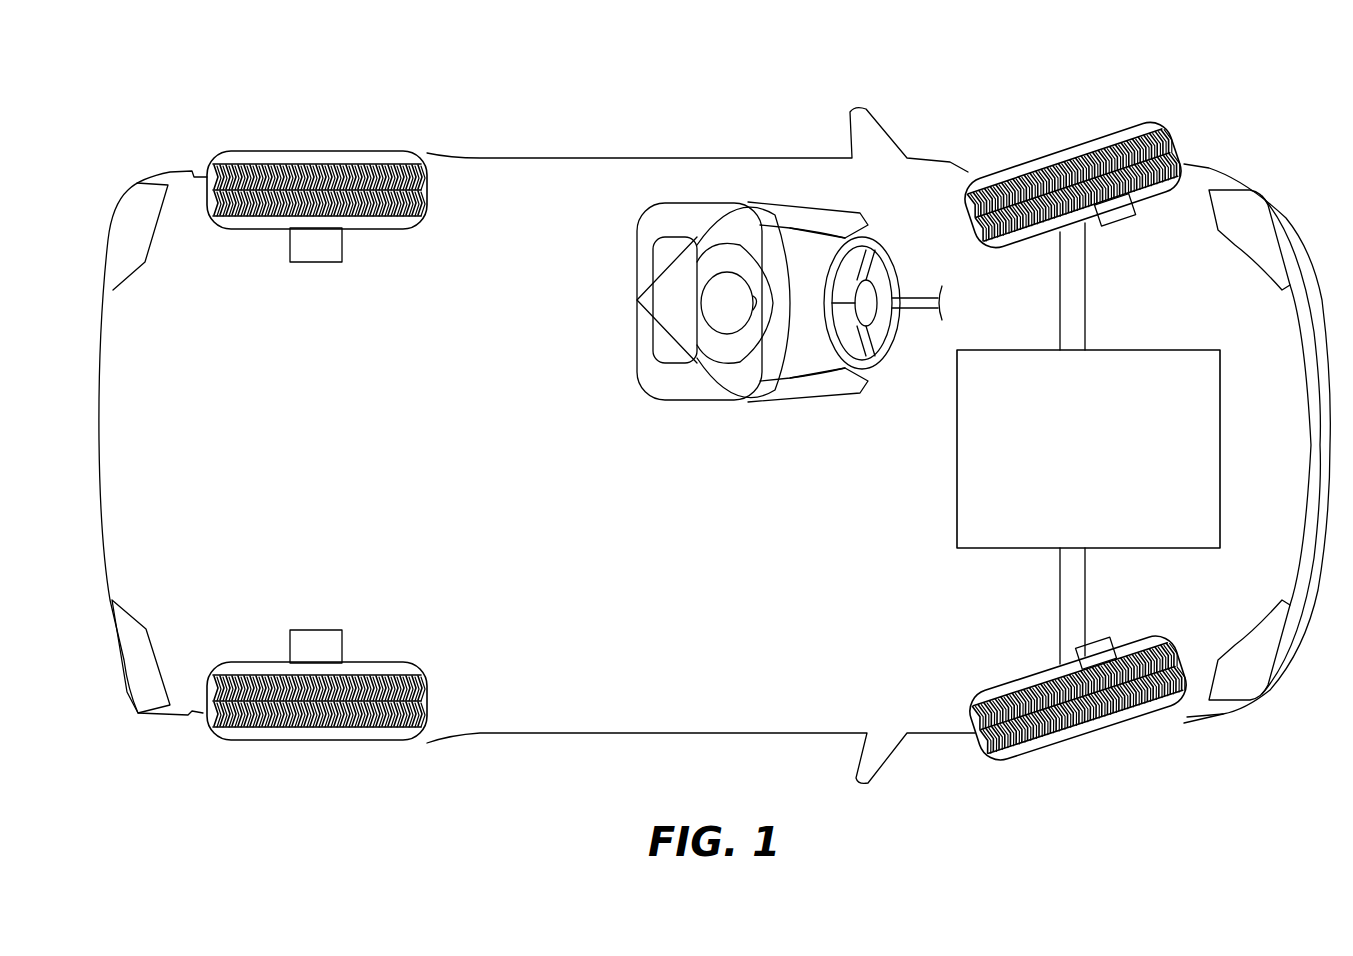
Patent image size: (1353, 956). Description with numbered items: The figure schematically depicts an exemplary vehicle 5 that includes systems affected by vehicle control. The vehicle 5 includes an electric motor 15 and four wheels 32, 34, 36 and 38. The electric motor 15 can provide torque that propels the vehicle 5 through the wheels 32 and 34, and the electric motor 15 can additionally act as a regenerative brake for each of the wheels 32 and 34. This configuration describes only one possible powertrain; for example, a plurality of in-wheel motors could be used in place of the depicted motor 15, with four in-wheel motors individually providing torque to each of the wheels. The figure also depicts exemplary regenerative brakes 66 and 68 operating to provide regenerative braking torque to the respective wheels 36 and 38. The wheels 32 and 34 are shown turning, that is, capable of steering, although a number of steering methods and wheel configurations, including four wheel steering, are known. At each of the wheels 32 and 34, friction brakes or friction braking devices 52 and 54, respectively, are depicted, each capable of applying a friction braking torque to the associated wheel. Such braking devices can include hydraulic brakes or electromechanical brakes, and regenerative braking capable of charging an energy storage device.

The vehicle 5 is at (540, 158).
The electric motor 15 is at (1205, 507).
The wheel 32 is at (1067, 154).
The wheel 34 is at (1063, 748).
The wheel 36 is at (257, 150).
The wheel 38 is at (257, 743).
The friction braking device 52 is at (1117, 208).
The friction braking device 54 is at (1105, 650).
The regenerative brake 66 is at (288, 243).
The regenerative brake 68 is at (335, 630).